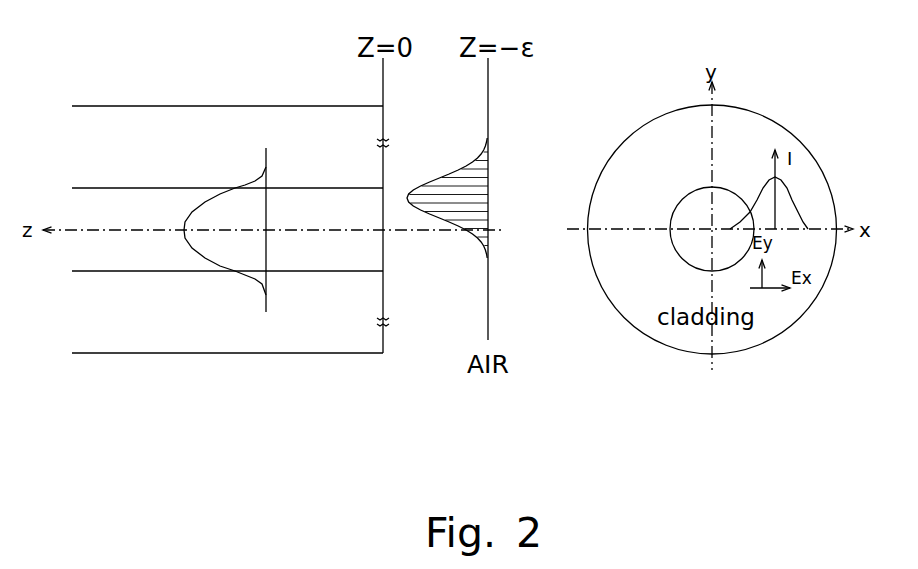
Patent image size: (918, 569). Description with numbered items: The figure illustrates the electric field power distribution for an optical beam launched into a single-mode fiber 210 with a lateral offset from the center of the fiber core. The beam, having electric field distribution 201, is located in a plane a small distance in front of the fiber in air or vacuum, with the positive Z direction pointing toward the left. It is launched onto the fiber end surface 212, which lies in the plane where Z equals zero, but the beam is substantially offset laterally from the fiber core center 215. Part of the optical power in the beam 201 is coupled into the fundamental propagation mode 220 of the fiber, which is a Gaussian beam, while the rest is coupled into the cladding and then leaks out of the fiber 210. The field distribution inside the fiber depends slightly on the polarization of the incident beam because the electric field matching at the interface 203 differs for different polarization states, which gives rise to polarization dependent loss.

The fiber 210 is at (227, 218).
The interface 203 is at (190, 187).
The fiber core center 215 is at (332, 233).
The fiber end surface 212 is at (388, 118).
The fundamental propagation mode 220 is at (203, 257).
The electric field distribution 201 is at (463, 238).